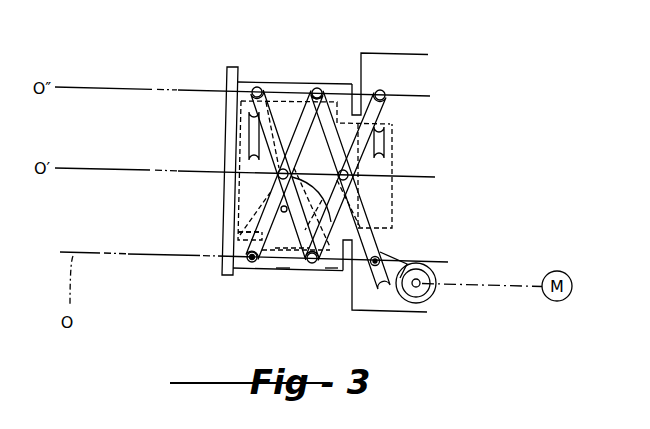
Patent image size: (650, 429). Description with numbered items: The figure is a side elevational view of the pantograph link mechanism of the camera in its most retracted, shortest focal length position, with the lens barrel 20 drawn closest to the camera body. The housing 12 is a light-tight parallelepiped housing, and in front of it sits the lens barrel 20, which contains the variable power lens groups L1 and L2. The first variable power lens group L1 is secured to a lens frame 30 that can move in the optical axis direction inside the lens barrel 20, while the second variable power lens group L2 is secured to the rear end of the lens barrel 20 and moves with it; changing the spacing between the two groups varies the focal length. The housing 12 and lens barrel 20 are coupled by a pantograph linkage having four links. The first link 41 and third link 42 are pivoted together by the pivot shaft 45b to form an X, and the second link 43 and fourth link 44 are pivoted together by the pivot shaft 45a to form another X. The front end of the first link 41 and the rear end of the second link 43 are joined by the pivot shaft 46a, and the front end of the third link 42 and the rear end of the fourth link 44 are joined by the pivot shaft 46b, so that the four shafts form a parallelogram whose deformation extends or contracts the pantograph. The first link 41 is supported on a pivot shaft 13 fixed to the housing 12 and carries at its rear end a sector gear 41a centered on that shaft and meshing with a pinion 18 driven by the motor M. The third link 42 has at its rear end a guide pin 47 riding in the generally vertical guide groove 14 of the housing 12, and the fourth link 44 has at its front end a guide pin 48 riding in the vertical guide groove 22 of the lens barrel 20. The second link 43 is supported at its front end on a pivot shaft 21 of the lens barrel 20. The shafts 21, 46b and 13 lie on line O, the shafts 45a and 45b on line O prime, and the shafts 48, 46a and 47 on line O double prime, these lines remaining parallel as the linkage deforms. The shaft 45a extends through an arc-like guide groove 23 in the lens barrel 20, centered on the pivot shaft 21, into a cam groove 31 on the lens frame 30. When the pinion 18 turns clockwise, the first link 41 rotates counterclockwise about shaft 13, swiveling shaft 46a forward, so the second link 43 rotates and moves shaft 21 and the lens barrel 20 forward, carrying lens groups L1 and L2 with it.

The housing 12 is at (380, 54).
The pivot shaft 13 is at (354, 262).
The guide groove 14 is at (384, 138).
The pinion 18 is at (432, 302).
The lens barrel 20 is at (278, 82).
The pivot shaft 21 is at (250, 261).
The guide groove 22 is at (242, 140).
The guide groove 23 is at (283, 262).
The lens frame 30 is at (220, 258).
The cam groove 31 is at (240, 231).
The first link 41 is at (333, 86).
The sector gear 41a is at (389, 293).
The third link 42 is at (330, 262).
The second link 43 is at (270, 264).
The fourth link 44 is at (283, 100).
The pivot shaft 45a is at (283, 175).
The pivot shaft 45b is at (350, 175).
The pivot shaft 46a is at (316, 85).
The pivot shaft 46b is at (308, 262).
The guide pin 47 is at (386, 90).
The guide pin 48 is at (255, 84).
The first variable power lens group L1 is at (238, 191).
The second variable power lens group L2 is at (386, 196).